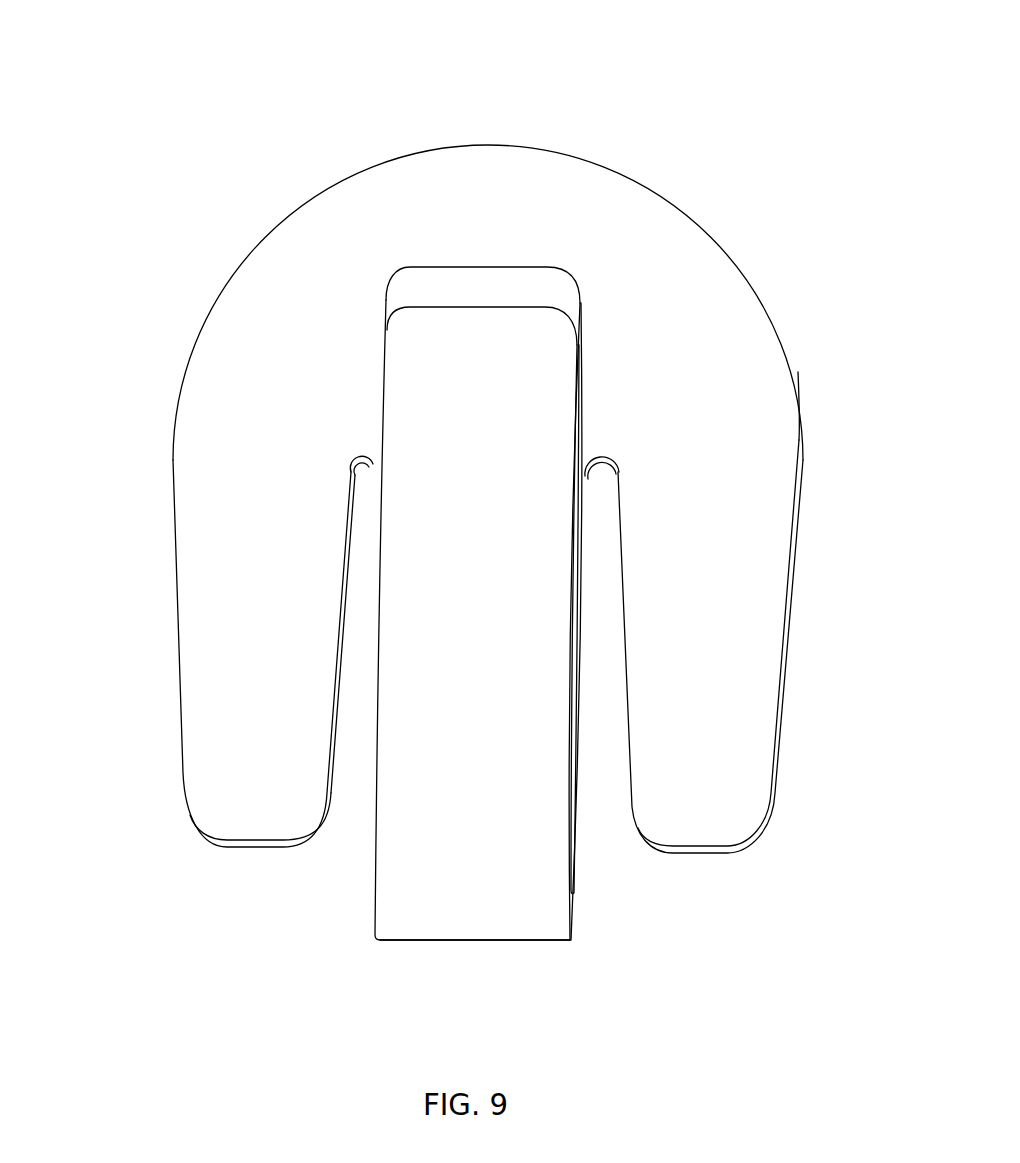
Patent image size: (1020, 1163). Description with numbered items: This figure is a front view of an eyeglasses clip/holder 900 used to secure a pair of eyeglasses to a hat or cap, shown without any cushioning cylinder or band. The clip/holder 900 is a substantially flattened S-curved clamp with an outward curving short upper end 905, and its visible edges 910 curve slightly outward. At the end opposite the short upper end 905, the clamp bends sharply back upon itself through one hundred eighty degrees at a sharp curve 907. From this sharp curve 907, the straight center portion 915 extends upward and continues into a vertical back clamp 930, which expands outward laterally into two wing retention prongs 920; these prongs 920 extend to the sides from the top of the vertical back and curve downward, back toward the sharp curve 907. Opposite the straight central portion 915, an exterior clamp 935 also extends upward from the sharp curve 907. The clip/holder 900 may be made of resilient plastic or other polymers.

The eyeglasses clip/holder 900 is at (250, 120).
The outward curving short upper end 905 is at (535, 343).
The sharp curve 907 is at (472, 915).
The visible edges 910 is at (489, 286).
The center portion 915 is at (578, 744).
The wing retention prongs 920 is at (255, 673).
The vertical back clamp 930 is at (497, 146).
The exterior clamp 935 is at (463, 660).